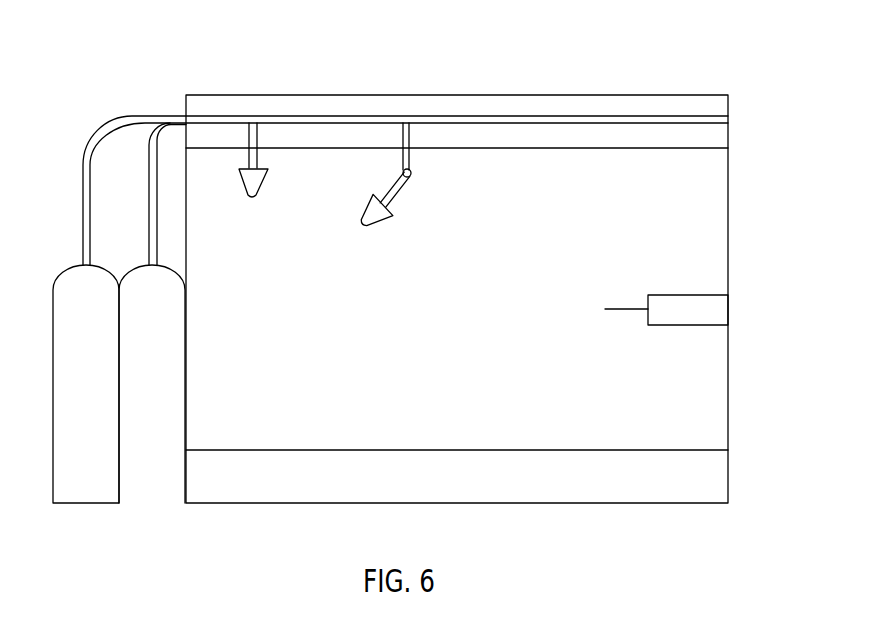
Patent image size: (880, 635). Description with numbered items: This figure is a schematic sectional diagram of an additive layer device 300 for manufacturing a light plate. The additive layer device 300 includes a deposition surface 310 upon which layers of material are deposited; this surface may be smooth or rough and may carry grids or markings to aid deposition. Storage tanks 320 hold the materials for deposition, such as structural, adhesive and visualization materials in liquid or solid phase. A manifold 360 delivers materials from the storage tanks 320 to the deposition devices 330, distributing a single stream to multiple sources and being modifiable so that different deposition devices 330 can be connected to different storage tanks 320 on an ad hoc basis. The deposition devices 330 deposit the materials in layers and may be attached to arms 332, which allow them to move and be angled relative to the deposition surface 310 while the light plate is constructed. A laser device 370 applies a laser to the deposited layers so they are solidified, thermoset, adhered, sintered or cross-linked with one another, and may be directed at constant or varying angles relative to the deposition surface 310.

The additive layer device 300 is at (643, 62).
The deposition surface 310 is at (690, 450).
The storage tanks 320 is at (103, 522).
The deposition devices 330 is at (267, 168).
The arms 332 is at (430, 159).
The manifold 360 is at (205, 122).
The laser device 370 is at (698, 315).